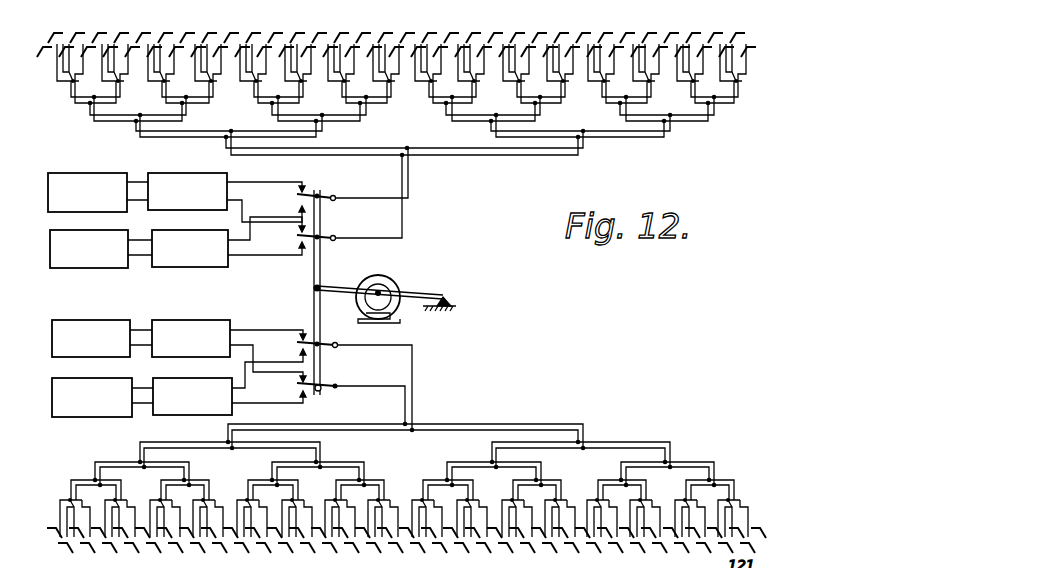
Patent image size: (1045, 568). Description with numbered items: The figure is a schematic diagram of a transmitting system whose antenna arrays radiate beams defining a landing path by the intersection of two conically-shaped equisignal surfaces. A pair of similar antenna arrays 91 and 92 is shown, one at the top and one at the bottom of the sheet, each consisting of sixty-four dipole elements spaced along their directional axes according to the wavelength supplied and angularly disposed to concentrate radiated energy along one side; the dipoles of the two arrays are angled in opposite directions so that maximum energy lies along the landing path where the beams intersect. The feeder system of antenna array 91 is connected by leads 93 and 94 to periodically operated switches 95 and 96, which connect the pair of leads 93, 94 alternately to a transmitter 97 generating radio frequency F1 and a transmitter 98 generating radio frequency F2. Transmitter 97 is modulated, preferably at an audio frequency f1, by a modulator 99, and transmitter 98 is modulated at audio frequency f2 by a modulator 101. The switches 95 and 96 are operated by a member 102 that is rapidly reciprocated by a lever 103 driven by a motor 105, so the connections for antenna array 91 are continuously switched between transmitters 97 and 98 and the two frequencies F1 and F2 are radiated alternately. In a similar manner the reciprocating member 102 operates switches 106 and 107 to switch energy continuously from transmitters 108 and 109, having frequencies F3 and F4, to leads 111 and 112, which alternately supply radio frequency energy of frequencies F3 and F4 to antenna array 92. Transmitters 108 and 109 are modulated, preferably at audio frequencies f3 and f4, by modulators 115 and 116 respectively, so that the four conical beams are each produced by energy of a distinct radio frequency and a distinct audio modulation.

The antenna array 91 is at (323, 37).
The antenna array 92 is at (766, 548).
The lead 93 is at (410, 185).
The lead 94 is at (404, 228).
The switch 95 is at (306, 193).
The switch 96 is at (305, 244).
The transmitter 97 is at (210, 173).
The transmitter 98 is at (203, 268).
The modulator 99 is at (67, 173).
The modulator 101 is at (58, 267).
The reciprocating member 102 is at (323, 264).
The lever 103 is at (428, 290).
The motor 105 is at (397, 279).
The switch 106 is at (334, 344).
The switch 107 is at (336, 384).
The transmitter 108 is at (193, 319).
The transmitter 109 is at (167, 408).
The lead 111 is at (413, 382).
The lead 112 is at (407, 404).
The modulator 115 is at (107, 319).
The modulator 116 is at (65, 413).